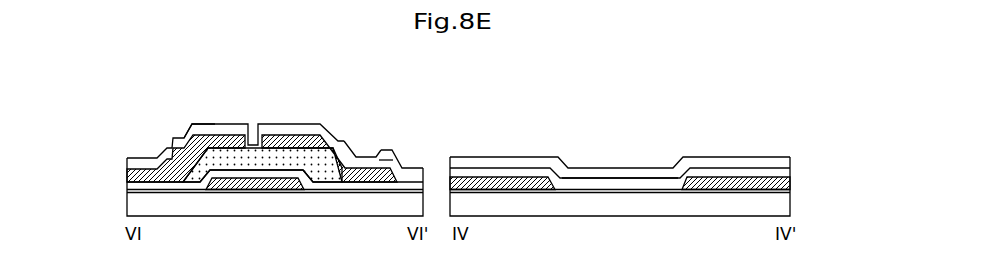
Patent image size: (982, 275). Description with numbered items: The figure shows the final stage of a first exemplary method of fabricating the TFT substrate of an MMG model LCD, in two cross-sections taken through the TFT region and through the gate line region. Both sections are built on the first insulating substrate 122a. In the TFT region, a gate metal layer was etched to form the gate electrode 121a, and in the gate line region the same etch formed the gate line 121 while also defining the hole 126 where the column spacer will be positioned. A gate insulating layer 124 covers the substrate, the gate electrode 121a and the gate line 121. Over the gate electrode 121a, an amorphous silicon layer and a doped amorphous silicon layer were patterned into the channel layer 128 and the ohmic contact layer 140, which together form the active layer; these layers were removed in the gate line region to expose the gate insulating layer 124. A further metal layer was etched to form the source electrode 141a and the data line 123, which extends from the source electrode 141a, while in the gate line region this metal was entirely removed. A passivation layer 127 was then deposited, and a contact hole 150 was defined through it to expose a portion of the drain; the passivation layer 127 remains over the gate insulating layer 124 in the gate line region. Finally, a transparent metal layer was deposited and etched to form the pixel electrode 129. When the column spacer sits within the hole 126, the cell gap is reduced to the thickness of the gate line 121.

The source electrode 141a is at (188, 126).
The ohmic contact layer 140 is at (215, 147).
The channel layer 128 is at (255, 157).
The pixel electrode 129 is at (363, 156).
The contact hole 150 is at (385, 150).
The passivation layer 127 is at (127, 160).
The data line 123 is at (127, 172).
The gate insulating layer 124 is at (127, 187).
The first insulating substrate 122a is at (127, 206).
The gate electrode 121a is at (246, 196).
The hole 126 is at (622, 176).
The gate line 121 is at (790, 181).